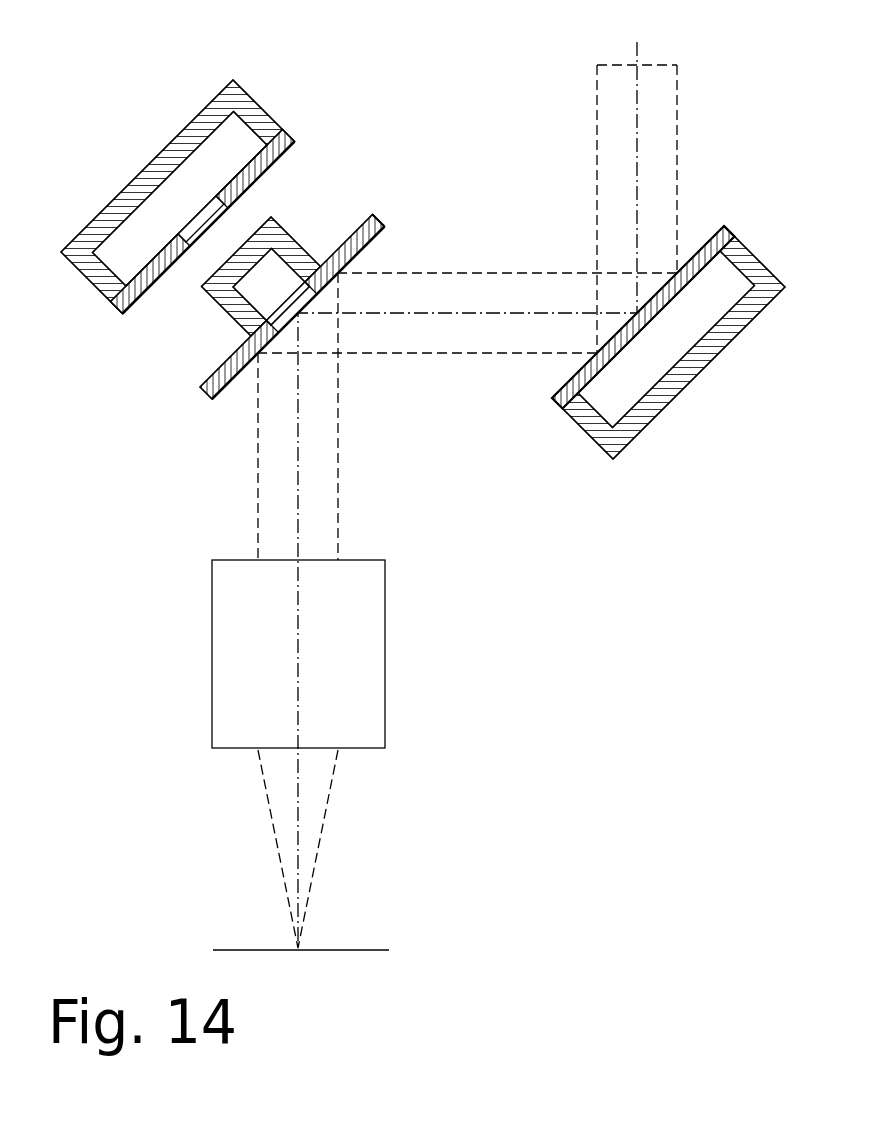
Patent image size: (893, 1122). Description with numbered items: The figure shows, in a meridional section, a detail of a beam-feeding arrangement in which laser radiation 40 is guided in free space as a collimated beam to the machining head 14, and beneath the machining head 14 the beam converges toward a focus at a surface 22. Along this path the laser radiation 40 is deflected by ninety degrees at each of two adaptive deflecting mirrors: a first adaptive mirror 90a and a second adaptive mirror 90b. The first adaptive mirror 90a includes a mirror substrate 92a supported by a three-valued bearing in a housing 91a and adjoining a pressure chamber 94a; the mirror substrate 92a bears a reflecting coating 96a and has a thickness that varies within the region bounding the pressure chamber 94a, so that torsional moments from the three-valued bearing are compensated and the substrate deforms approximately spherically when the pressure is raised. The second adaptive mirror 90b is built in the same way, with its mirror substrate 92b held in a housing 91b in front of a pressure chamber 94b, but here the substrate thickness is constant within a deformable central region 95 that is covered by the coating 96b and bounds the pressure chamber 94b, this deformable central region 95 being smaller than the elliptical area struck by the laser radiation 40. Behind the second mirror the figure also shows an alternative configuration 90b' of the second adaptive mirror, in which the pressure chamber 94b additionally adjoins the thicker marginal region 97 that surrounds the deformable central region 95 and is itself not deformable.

The machining head 14 is at (363, 617).
The workpiece surface / focal point 22 is at (305, 948).
The laser radiation 40 is at (677, 140).
The first adaptive mirror 90a is at (649, 332).
The second adaptive mirror 90b is at (296, 268).
The alternative configuration of the second adaptive mirror 90b' is at (215, 167).
The housing 91a is at (592, 428).
The housing 91b is at (214, 297).
The mirror substrate 92a is at (572, 378).
The mirror substrate 92b is at (205, 382).
The pressure chamber 94a is at (635, 401).
The pressure chamber 94b is at (197, 219).
The deformable central region 95 is at (214, 232).
The reflecting coating 96a is at (697, 237).
The reflecting coating 96b is at (372, 247).
The thicker marginal region 97 is at (173, 278).